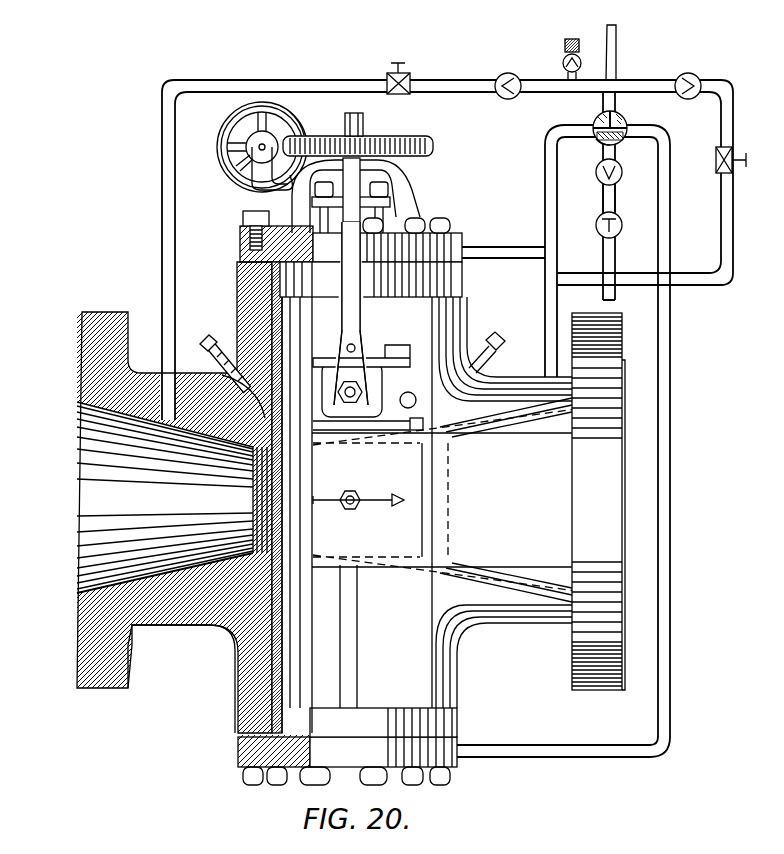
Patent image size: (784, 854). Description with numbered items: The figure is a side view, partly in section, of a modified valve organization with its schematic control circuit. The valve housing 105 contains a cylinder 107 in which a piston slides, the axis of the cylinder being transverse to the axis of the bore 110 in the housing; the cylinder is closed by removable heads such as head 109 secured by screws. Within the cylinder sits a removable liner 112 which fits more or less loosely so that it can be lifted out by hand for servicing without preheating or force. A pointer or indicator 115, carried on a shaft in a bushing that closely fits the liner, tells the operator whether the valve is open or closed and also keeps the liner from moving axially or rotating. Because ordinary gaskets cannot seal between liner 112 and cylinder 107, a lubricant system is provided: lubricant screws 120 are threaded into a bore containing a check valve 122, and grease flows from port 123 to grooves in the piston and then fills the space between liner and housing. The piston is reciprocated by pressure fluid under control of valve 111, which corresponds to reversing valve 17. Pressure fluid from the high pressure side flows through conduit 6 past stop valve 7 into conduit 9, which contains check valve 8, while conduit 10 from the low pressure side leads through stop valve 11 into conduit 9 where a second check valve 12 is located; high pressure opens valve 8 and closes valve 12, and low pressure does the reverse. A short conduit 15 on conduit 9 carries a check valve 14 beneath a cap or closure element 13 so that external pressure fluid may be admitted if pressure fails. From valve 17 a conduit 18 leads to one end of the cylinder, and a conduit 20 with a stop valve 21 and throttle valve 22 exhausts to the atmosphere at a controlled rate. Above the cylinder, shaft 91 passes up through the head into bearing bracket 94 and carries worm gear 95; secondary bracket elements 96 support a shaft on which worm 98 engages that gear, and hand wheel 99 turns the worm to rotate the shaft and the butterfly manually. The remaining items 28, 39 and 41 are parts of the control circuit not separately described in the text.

The conduit 6 is at (668, 429).
The stop valve 7 is at (696, 74).
The check valve 8 is at (734, 158).
The conduit 9 is at (650, 80).
The conduit 10 is at (236, 80).
The stop valve 11 is at (395, 72).
The second check valve 12 is at (506, 73).
The cap or closure element 13 is at (572, 38).
The check valve 14 is at (580, 58).
The short conduit 15 is at (568, 77).
The reversing valve 17 is at (629, 196).
The conduit 18 is at (546, 192).
The conduit 20 is at (599, 164).
The stop valve 21 is at (617, 177).
The throttle valve 22 is at (596, 227).
The vent pipe 28 is at (617, 50).
The valve body 39 is at (595, 141).
The three-way valve 41 is at (600, 115).
The rod or shaft 91 is at (358, 126).
The bearing bracket 94 is at (408, 182).
The worm gear 95 is at (428, 145).
The secondary bracket elements 96 is at (262, 180).
The worm 98 is at (227, 166).
The hand wheel 99 is at (311, 113).
The valve housing 105 is at (468, 302).
The cylinder 107 is at (262, 286).
The removable head 109 is at (240, 247).
The bore 110 is at (90, 465).
The control valve 111 is at (368, 375).
The removable liner 112 is at (232, 665).
The pointer or indicator 115 is at (376, 488).
The lubricant screws 120 is at (204, 338).
The check valve 122 is at (213, 383).
The port 123 is at (236, 452).